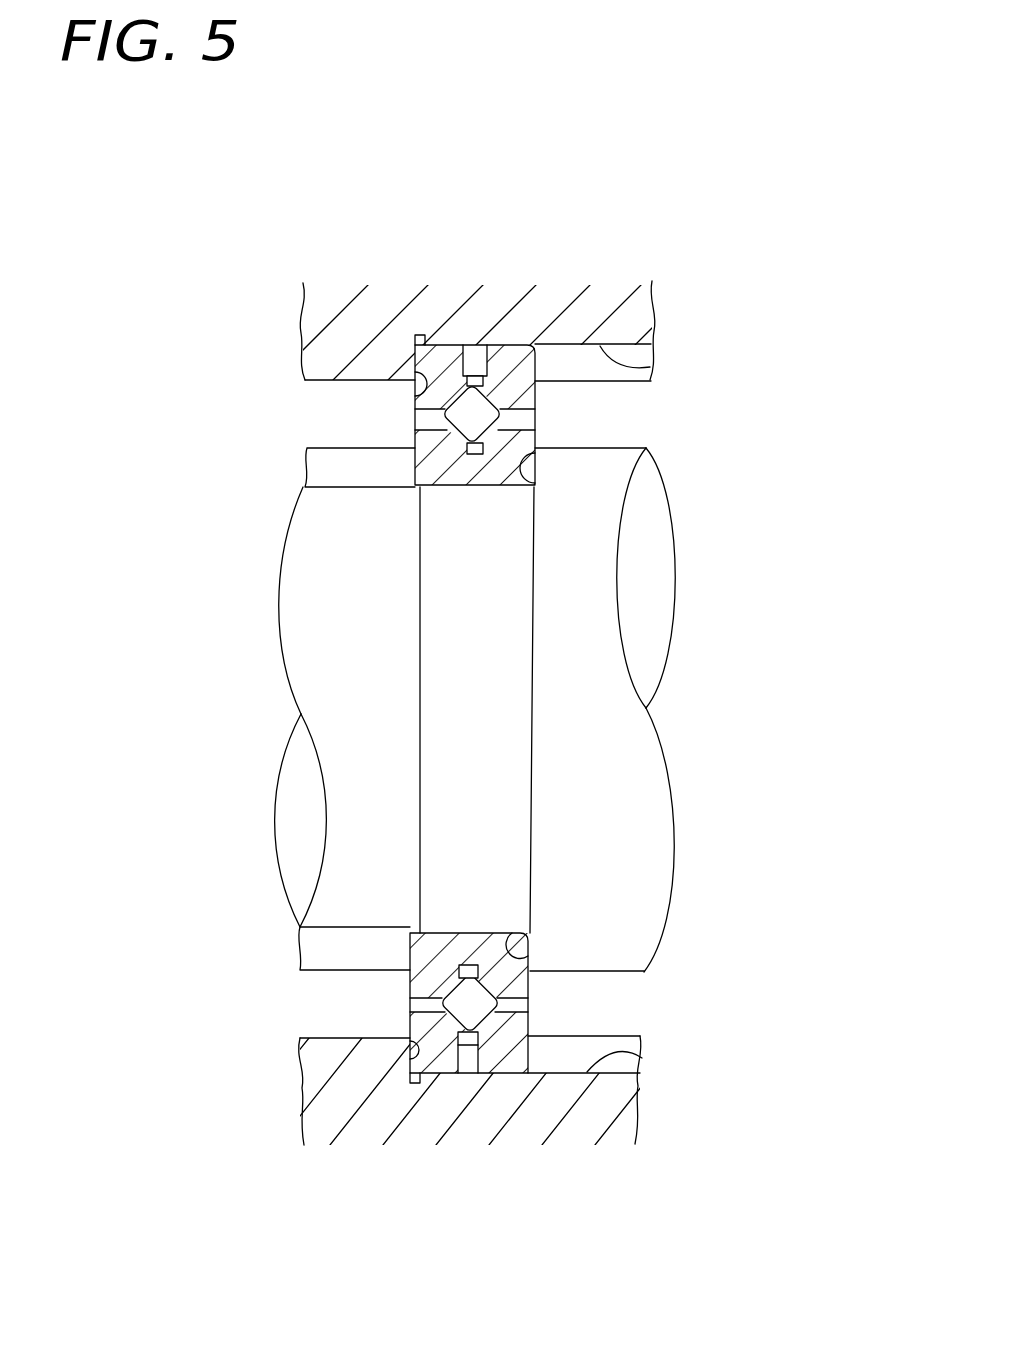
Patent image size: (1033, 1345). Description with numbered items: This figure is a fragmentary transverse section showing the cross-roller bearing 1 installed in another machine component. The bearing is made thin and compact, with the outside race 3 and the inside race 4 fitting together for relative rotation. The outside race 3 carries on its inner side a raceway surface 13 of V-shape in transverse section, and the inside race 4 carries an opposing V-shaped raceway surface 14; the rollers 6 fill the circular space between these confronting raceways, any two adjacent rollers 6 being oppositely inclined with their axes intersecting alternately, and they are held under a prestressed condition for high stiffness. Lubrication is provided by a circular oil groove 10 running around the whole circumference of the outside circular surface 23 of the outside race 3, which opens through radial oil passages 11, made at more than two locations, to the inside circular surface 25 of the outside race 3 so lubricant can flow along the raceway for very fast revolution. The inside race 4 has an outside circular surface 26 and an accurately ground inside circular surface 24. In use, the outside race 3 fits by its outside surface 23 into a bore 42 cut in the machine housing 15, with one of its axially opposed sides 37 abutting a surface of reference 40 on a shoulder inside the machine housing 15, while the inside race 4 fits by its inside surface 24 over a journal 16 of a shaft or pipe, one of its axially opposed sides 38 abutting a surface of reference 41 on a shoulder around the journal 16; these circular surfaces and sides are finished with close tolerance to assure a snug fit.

The cross-roller bearing 1 is at (550, 402).
The outside race 3 is at (410, 347).
The inside race 4 is at (430, 463).
The roller 6 is at (535, 433).
The circular oil groove 10 is at (472, 1022).
The oil passage 11 is at (468, 1057).
The raceway surface 13 is at (448, 347).
The raceway surface 14 is at (420, 431).
The machine housing 15 is at (585, 318).
The journal 16 is at (592, 697).
The outside circular surface 23 is at (512, 347).
The inside circular surface 24 is at (470, 487).
The inside circular surface 25 is at (410, 998).
The outside circular surface 26 is at (530, 1007).
The axially opposed side 37 is at (415, 347).
The axially opposed side 38 is at (535, 472).
The surface of reference 40 is at (415, 397).
The surface of reference 41 is at (535, 497).
The bore 42 is at (657, 363).